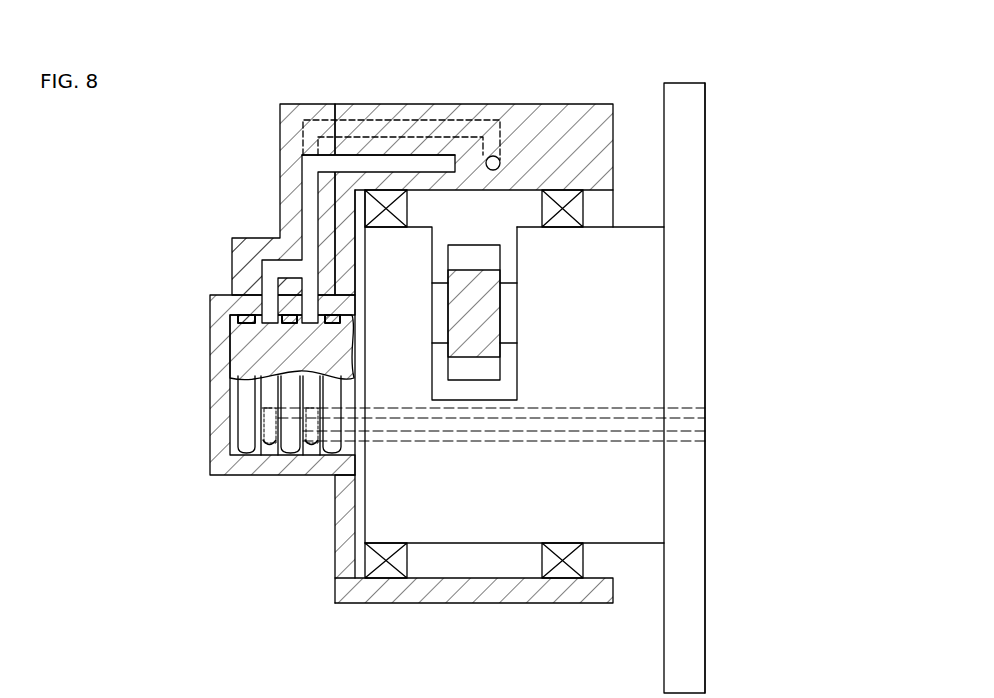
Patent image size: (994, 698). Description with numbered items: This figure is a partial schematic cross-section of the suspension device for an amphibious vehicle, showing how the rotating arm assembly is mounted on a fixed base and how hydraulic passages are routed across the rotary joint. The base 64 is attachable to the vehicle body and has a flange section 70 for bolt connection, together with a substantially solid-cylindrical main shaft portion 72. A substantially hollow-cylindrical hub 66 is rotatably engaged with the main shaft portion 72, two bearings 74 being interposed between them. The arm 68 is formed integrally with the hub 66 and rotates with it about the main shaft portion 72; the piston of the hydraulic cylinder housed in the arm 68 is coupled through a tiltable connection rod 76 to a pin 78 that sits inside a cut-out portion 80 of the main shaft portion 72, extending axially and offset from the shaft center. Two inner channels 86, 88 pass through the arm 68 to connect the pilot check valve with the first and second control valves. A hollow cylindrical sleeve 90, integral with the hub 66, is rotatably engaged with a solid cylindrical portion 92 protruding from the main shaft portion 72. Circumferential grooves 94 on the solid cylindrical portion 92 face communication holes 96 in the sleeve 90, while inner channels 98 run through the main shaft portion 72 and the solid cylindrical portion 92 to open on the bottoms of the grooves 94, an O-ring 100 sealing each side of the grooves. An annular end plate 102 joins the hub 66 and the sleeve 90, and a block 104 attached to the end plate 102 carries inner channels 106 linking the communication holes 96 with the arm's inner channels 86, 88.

The base 64 is at (705, 83).
The hub 66 is at (472, 603).
The arm 68 is at (535, 104).
The flange section 70 is at (706, 145).
The main shaft portion 72 is at (620, 303).
The bearings 74 is at (383, 578).
The connection rod 76 is at (448, 303).
The pin 78 is at (513, 315).
The cut-out portion 80 is at (513, 248).
The inner channel 86 is at (409, 158).
The inner channel 88 is at (460, 118).
The sleeve 90 is at (246, 478).
The solid cylindrical portion 92 is at (230, 350).
The circumferential grooves 94 is at (268, 383).
The communication holes 96 is at (262, 256).
The inner channels 98 is at (290, 420).
The O-ring 100 is at (233, 313).
The end plate 102 is at (335, 530).
The block 104 is at (280, 104).
The inner channels 106 is at (303, 140).